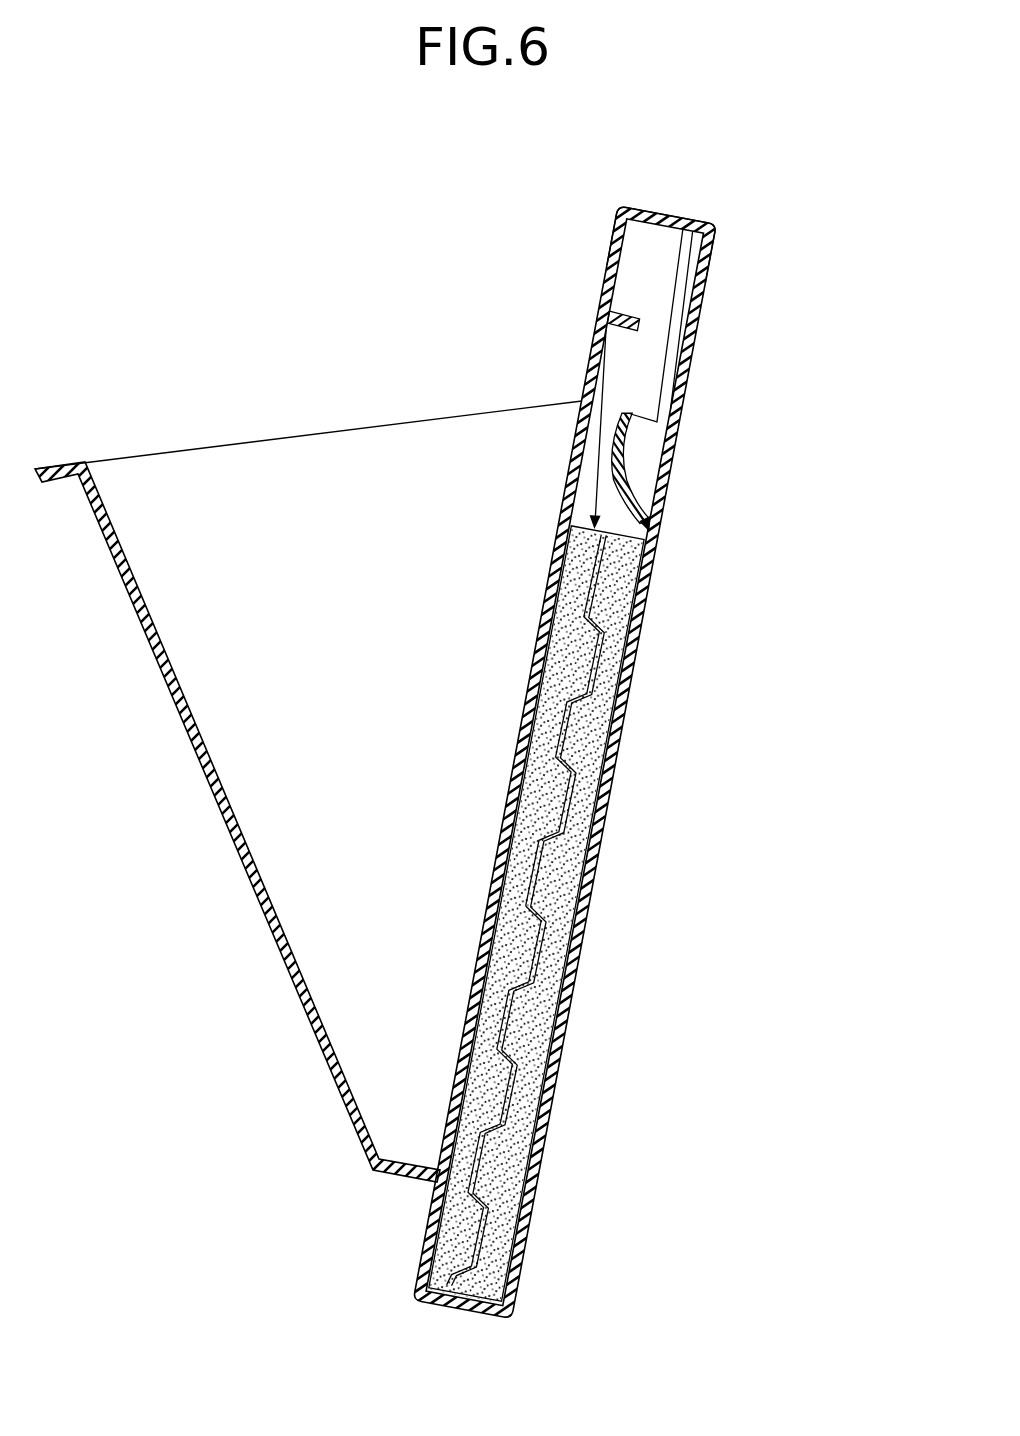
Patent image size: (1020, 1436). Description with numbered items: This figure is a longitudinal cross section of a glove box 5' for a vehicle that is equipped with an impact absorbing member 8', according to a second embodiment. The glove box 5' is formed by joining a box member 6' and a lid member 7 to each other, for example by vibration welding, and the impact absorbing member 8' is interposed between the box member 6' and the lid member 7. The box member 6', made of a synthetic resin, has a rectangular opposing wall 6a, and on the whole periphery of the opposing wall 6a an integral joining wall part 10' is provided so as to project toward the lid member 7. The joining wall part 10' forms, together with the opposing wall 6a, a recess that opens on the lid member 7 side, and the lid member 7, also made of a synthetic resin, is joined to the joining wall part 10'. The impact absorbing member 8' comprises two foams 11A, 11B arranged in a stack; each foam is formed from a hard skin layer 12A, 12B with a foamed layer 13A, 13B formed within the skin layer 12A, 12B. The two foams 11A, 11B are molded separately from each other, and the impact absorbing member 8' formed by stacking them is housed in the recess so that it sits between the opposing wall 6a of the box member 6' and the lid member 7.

The glove box 5' is at (308, 765).
The box member 6' is at (510, 650).
The opposing wall 6a is at (528, 697).
The joining wall part 10' is at (629, 197).
The lid member 7 is at (634, 680).
The impact absorbing member 8' is at (591, 404).
The foam 11A is at (630, 410).
The foam 11B is at (804, 320).
The hard skin layer 12A is at (527, 742).
The foamed layer 13A is at (494, 890).
The hard skin layer 12B is at (577, 985).
The foamed layer 13B is at (558, 1043).